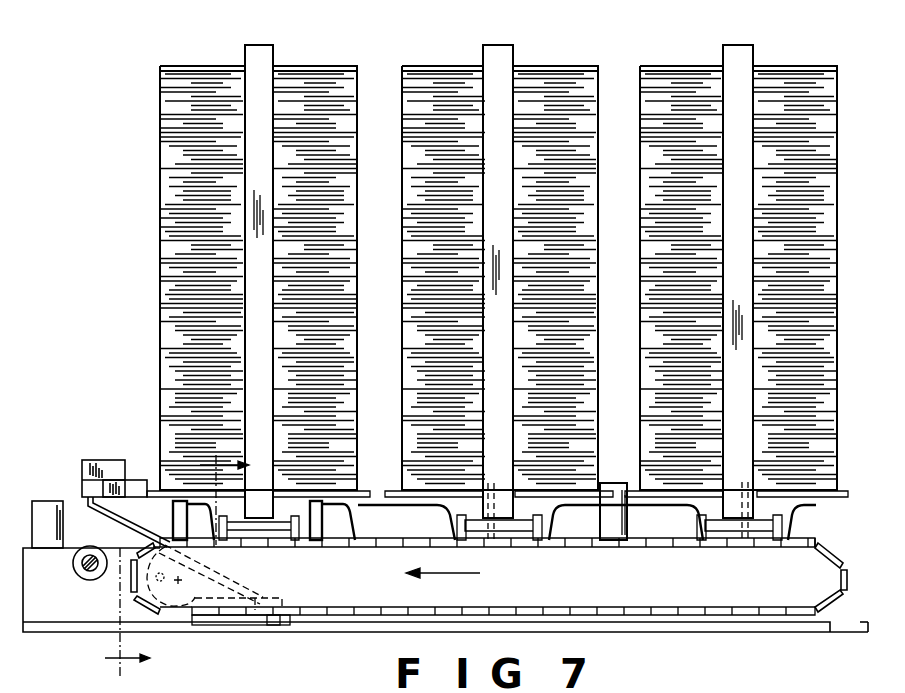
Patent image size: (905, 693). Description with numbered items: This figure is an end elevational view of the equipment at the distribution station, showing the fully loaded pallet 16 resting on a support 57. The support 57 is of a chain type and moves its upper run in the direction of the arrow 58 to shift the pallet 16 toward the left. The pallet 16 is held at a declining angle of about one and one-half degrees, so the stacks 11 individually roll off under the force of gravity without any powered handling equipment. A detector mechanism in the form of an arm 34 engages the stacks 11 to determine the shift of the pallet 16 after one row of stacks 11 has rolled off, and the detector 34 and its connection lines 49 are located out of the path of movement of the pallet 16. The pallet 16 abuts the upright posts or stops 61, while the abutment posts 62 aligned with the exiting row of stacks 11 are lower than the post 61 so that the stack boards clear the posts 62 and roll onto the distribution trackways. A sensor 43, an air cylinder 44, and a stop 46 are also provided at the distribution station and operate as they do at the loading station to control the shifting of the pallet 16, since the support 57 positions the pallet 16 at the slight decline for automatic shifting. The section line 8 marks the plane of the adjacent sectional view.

The stacks 11 is at (408, 82).
The arm 34 is at (137, 483).
The connection lines 49 is at (120, 527).
The stop 46 is at (174, 580).
The air cylinder 44 is at (225, 622).
The sensor 43 is at (268, 622).
The abutment posts 62 is at (333, 527).
The arrow 58 is at (457, 582).
The support 57 is at (570, 546).
The upright posts or stops 61 is at (627, 522).
The pallet 16 is at (812, 507).
The section line 8- 8 is at (165, 565).